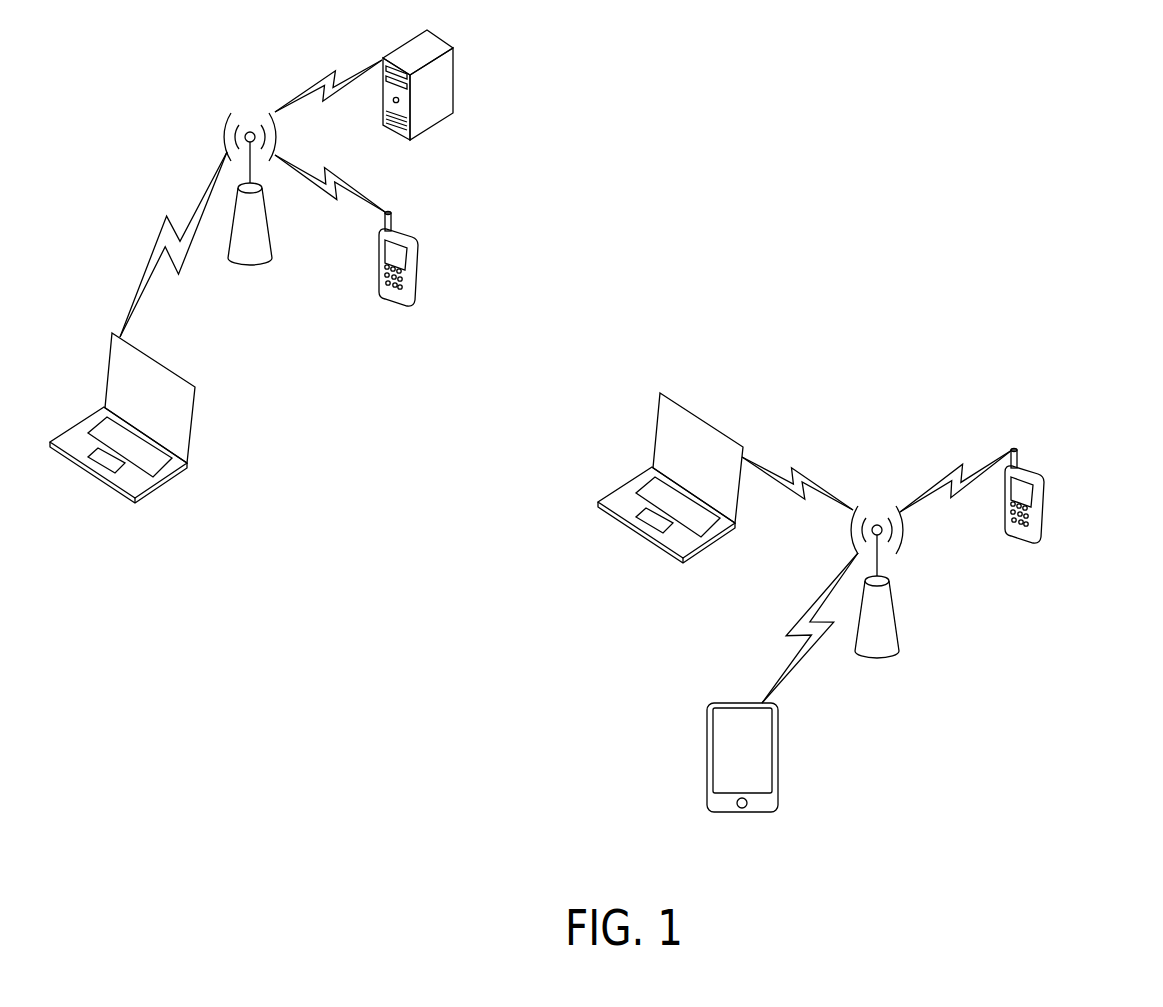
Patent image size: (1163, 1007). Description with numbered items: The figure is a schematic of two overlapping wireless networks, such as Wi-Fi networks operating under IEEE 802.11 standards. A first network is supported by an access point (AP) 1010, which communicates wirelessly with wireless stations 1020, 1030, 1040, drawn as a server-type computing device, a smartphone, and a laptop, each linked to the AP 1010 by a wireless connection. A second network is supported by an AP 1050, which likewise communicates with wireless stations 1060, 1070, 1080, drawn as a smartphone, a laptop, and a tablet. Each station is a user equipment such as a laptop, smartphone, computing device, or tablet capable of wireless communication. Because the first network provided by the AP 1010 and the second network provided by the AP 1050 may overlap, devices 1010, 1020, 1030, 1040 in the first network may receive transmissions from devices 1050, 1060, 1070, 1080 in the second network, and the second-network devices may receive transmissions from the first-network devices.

The access point (AP) 1010 is at (240, 190).
The wireless station (STA) 1020 is at (455, 91).
The wireless station (STA) 1030 is at (419, 264).
The wireless station (STA) 1040 is at (178, 473).
The access point (AP) 1050 is at (894, 656).
The wireless station (STA) 1060 is at (1047, 500).
The wireless station (STA) 1070 is at (655, 434).
The wireless station (STA) 1080 is at (779, 767).